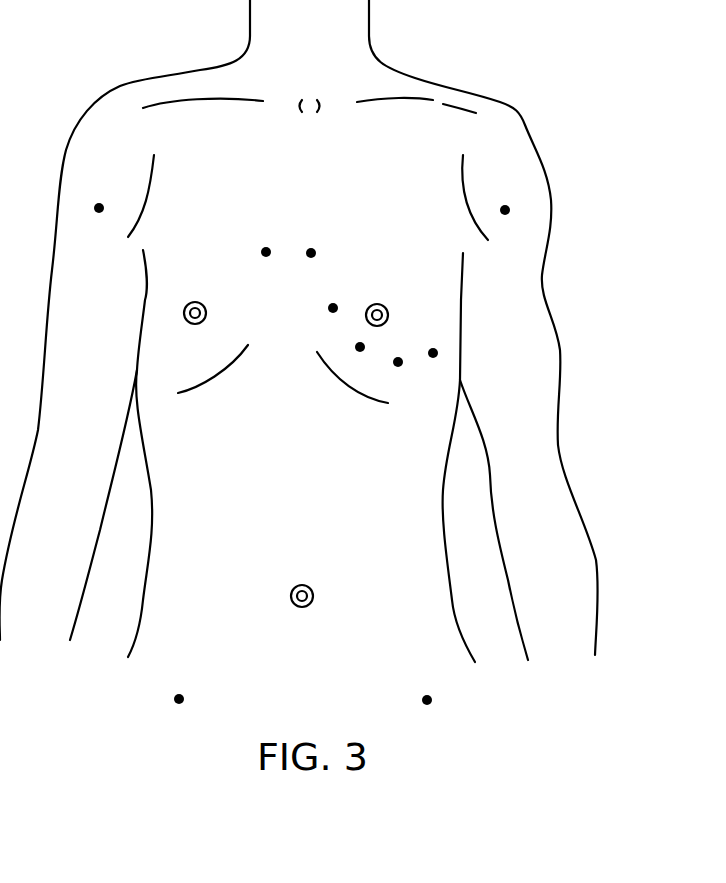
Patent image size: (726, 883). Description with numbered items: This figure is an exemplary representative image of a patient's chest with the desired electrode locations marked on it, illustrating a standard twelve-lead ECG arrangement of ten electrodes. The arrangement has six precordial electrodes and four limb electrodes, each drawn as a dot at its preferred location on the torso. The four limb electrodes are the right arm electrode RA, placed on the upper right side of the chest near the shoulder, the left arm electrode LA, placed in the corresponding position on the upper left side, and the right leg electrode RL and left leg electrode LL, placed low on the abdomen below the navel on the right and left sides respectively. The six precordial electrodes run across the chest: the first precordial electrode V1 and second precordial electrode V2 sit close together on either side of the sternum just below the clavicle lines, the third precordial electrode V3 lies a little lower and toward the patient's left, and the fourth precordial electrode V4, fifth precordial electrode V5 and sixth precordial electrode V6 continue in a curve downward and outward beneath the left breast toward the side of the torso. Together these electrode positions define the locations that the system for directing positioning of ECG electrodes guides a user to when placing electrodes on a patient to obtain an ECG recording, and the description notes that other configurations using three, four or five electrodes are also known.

The right arm limb electrode RA is at (98, 192).
The left arm limb electrode LA is at (503, 194).
The first precordial electrode V1 is at (257, 233).
The second precordial electrode V2 is at (310, 233).
The third precordial electrode V3 is at (341, 293).
The fourth precordial electrode V4 is at (365, 367).
The fifth precordial electrode V5 is at (405, 380).
The sixth precordial electrode V6 is at (441, 372).
The right leg limb electrode RL is at (180, 685).
The left leg limb electrode LL is at (427, 685).